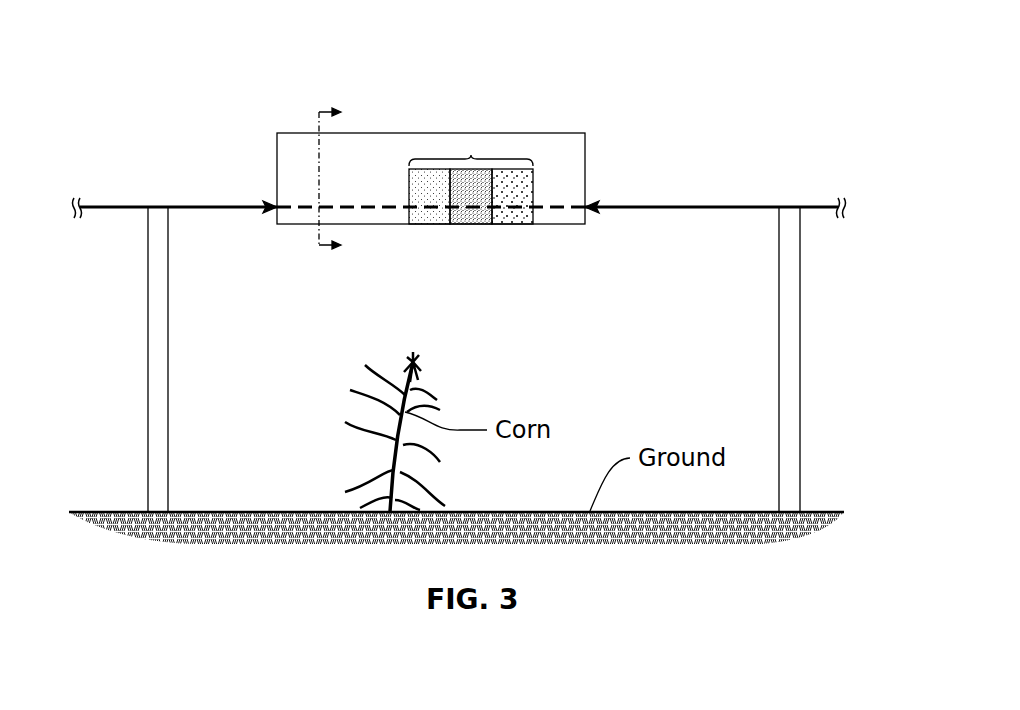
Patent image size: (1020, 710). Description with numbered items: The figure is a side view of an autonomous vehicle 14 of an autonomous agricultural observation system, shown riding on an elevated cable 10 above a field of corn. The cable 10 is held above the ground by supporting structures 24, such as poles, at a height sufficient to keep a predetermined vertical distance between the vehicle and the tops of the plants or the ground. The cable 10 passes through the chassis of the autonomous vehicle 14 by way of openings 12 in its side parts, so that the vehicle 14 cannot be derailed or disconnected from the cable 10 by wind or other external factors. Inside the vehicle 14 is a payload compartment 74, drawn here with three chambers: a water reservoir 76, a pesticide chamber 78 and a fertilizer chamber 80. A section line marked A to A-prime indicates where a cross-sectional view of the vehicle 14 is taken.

The cable 10 is at (103, 207).
The opening 12 is at (266, 205).
The autonomous vehicle 14 is at (601, 115).
The supporting structure 24 is at (148, 355).
The payload compartment 74 is at (474, 201).
The water reservoir 76 is at (427, 225).
The pesticide chamber 78 is at (470, 225).
The fertilizer chamber 80 is at (515, 225).